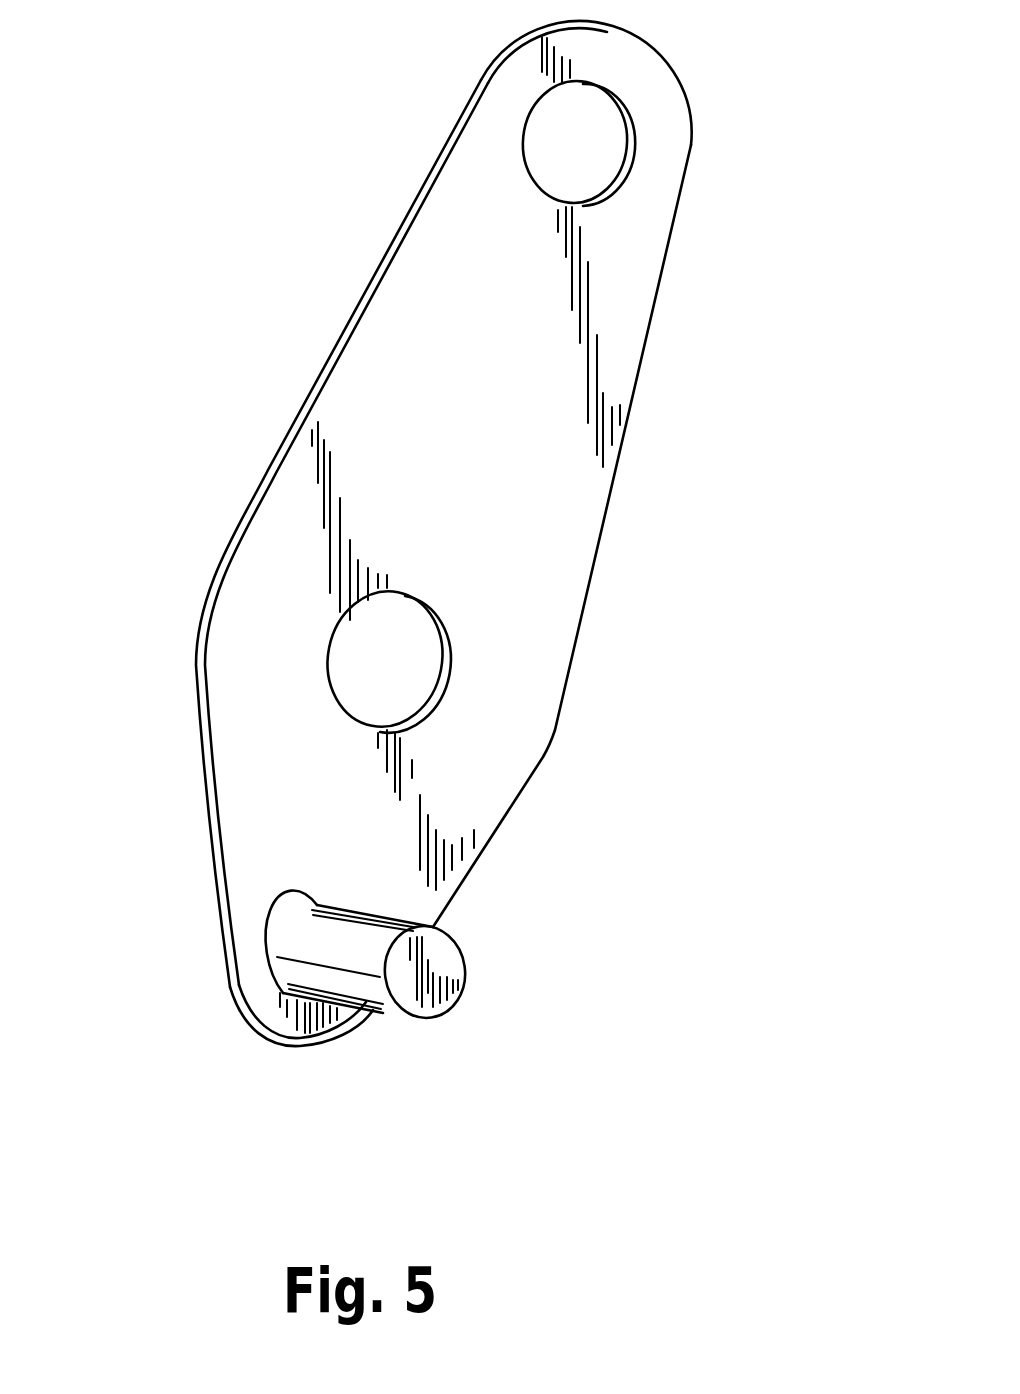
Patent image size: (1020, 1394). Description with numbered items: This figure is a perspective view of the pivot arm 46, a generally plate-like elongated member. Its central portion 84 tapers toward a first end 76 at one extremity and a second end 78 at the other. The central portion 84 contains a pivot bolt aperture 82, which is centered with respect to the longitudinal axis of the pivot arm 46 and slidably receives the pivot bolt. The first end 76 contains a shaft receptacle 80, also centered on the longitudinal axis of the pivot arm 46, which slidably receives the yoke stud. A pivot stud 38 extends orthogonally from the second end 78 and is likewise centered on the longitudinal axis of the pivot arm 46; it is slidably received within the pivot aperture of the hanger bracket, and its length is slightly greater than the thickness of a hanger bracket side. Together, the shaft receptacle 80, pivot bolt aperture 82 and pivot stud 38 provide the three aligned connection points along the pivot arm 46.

The pivot stud 38 is at (430, 968).
The pivot arm 46 is at (588, 480).
The first end 76 is at (652, 176).
The second end 78 is at (262, 921).
The shaft receptacle 80 is at (632, 125).
The pivot bolt aperture 82 is at (442, 662).
The central portion 84 is at (235, 625).